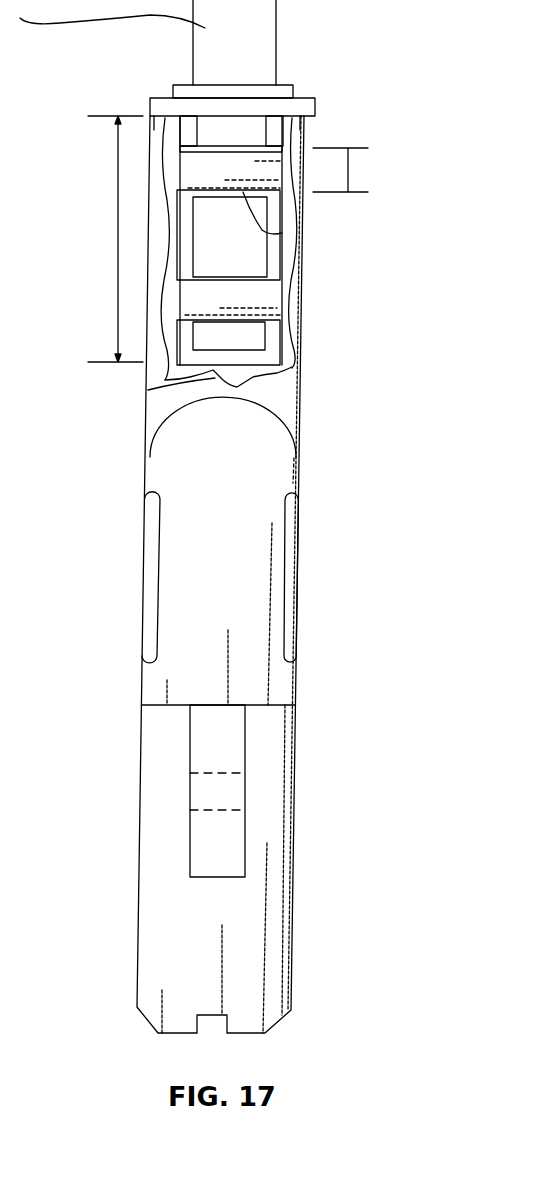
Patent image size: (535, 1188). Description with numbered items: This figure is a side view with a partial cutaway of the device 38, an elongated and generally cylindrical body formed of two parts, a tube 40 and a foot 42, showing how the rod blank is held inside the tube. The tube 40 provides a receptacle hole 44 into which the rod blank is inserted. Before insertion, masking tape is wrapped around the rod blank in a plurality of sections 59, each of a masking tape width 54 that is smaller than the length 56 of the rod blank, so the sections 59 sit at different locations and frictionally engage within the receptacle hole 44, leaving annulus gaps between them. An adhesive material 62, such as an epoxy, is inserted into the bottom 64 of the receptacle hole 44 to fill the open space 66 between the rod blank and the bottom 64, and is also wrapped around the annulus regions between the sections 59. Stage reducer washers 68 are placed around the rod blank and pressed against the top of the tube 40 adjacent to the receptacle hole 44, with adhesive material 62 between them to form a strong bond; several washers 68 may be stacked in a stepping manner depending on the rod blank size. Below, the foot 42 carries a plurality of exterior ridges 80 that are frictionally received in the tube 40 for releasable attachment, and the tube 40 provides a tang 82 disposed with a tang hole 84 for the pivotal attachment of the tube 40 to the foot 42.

The device 38 is at (109, 550).
The tube 40 is at (288, 410).
The foot 42 is at (283, 733).
The receptacle hole 44 is at (297, 374).
The masking tape width 54 is at (350, 173).
The length of the rod blank 56 is at (115, 239).
The sections of the masking tape 59 is at (243, 297).
The adhesive material 62 is at (297, 130).
The bottom of the receptacle hole 64 is at (148, 390).
The open space 66 is at (276, 342).
The stage reducer washers 68 is at (243, 86).
The plurality of exterior ridges 80 is at (297, 557).
The tang 82 is at (228, 853).
The tang hole 84 is at (230, 792).